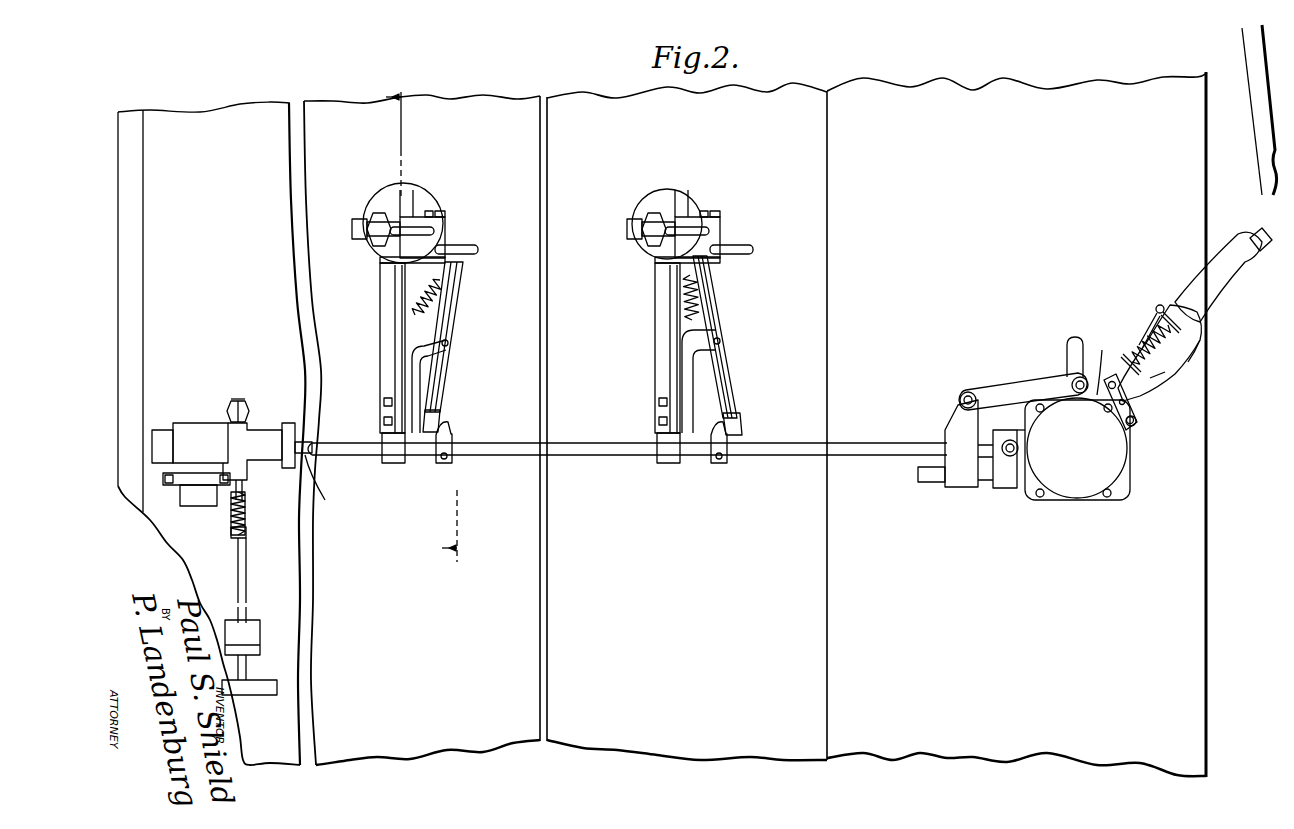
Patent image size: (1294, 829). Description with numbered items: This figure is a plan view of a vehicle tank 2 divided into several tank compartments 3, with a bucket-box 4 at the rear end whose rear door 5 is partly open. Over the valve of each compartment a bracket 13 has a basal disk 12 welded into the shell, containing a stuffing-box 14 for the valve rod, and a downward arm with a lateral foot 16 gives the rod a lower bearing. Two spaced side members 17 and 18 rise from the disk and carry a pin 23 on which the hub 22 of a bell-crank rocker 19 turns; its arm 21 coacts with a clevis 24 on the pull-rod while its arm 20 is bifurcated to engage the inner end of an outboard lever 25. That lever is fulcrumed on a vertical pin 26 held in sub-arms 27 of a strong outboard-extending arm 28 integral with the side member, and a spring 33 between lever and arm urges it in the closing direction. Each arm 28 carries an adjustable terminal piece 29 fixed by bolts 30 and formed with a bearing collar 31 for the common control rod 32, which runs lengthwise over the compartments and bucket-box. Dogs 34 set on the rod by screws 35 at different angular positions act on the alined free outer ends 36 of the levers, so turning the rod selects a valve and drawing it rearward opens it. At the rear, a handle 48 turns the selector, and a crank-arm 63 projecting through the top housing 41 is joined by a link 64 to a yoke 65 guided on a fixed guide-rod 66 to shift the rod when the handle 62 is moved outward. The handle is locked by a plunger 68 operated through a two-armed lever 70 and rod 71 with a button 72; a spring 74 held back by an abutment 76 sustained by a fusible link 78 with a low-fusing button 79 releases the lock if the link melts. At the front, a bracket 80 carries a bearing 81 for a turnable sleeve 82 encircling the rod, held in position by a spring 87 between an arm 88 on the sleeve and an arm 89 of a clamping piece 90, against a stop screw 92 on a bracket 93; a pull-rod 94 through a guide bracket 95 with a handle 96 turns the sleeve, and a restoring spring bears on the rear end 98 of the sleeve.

The tank 2 is at (500, 92).
The tank compartments 3 is at (610, 421).
The box 4 is at (1094, 92).
The rear door 5 is at (1250, 70).
The basal disk 12 is at (428, 211).
The bracket 13 is at (366, 218).
The stuffing-box 14 is at (368, 243).
The lateral foot 16 is at (427, 326).
The side member 17 is at (396, 284).
The side member 18 is at (442, 211).
The bell-crank rocker 19 is at (441, 230).
The arm 20 is at (457, 260).
The arm 21 is at (414, 225).
The hub 22 is at (475, 247).
The pin 23 is at (437, 211).
The clevis 24 is at (365, 222).
The lever 25 is at (460, 314).
The vertical pin 26 is at (447, 348).
The sub-arms 27 is at (414, 355).
The outboard-extending arm 28 is at (380, 345).
The terminal piece 29 is at (384, 403).
The bolts 30 is at (386, 425).
The bearing collar 31 is at (395, 464).
The control rod 32 is at (589, 456).
The spring 33 is at (439, 318).
The dog 34 is at (452, 430).
The screws 35 is at (443, 460).
The free outer end 36 is at (442, 417).
The top housing 41 is at (1128, 454).
The handle 48 is at (1072, 338).
The handle 62 is at (1192, 356).
The crank-arm 63 is at (1107, 357).
The link 64 is at (1020, 388).
The yoke 65 is at (945, 430).
The guide-rod 66 is at (926, 483).
The plunger 68 is at (1136, 424).
The two-armed lever 70 is at (1138, 402).
The rod 71 is at (1162, 376).
The button 72 is at (1252, 240).
The spring 74 is at (1194, 327).
The abutment 76 is at (1200, 368).
The fusible link 78 is at (1160, 305).
The button 79 is at (1140, 337).
The bracket 80 is at (200, 506).
The horizontal bearing 81 is at (186, 423).
The turnable sleeve 82 is at (266, 428).
The spring 87 is at (246, 514).
The arm 88 is at (246, 485).
The arm 89 is at (234, 540).
The clamping piece 90 is at (190, 485).
The stop screw 92 is at (242, 400).
The bracket 93 is at (232, 400).
The pull-rod 94 is at (247, 558).
The guide bracket 95 is at (261, 632).
The handle 96 is at (262, 696).
The rear end 98 is at (325, 488).